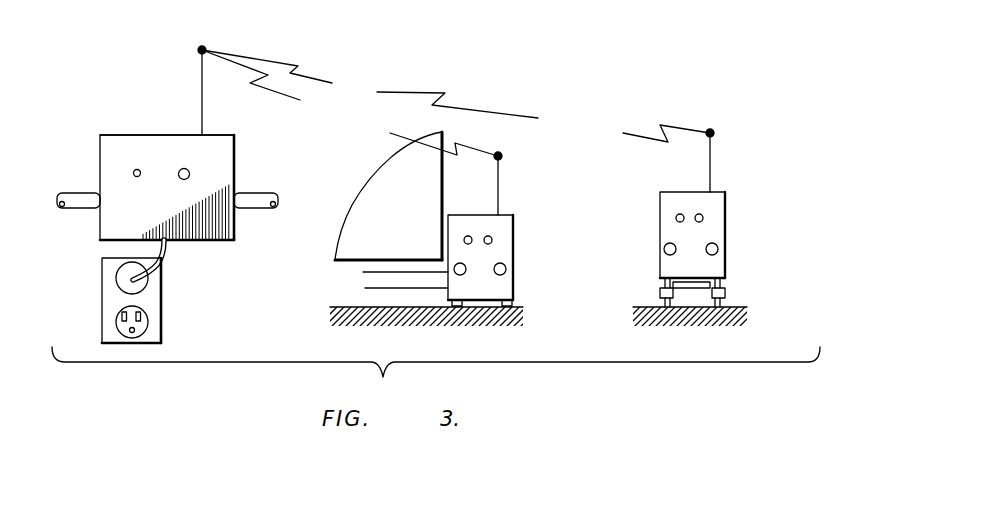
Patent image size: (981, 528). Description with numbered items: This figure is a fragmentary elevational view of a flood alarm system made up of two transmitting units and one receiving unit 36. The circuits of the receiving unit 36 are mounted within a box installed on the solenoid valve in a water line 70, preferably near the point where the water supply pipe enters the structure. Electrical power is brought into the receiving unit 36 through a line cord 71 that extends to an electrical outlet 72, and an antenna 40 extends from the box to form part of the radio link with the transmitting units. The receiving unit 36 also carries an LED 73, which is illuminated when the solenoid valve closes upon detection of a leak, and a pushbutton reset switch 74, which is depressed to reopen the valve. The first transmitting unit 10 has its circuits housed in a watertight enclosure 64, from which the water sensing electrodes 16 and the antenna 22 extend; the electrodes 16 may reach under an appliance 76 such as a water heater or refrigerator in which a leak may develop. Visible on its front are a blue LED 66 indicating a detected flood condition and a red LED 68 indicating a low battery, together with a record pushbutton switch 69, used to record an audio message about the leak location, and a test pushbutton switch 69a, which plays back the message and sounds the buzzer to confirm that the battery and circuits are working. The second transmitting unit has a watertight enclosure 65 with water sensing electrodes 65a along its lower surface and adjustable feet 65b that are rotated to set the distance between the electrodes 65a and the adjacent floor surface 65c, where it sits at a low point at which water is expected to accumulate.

The first transmitting unit 10 is at (127, 131).
The water sensing electrodes 16 is at (366, 288).
The antenna 22 is at (502, 187).
The receiving unit 36 is at (175, 135).
The antenna 40 is at (202, 83).
The watertight enclosure 64 is at (513, 253).
The watertight enclosure 65 is at (725, 235).
The water sensing electrodes 65a is at (695, 290).
The adjustable feet 65b is at (726, 292).
The floor surface 65c is at (648, 307).
The blue LED 66 is at (468, 236).
The red LED 68 is at (493, 240).
The record pushbutton switch 69 is at (462, 275).
The test pushbutton switch 69a is at (507, 270).
The water line 70 is at (80, 209).
The line cord 71 is at (168, 256).
The electrical outlet 72 is at (161, 310).
The LED 73 is at (133, 173).
The pushbutton reset switch 74 is at (190, 174).
The appliance 76 is at (408, 174).